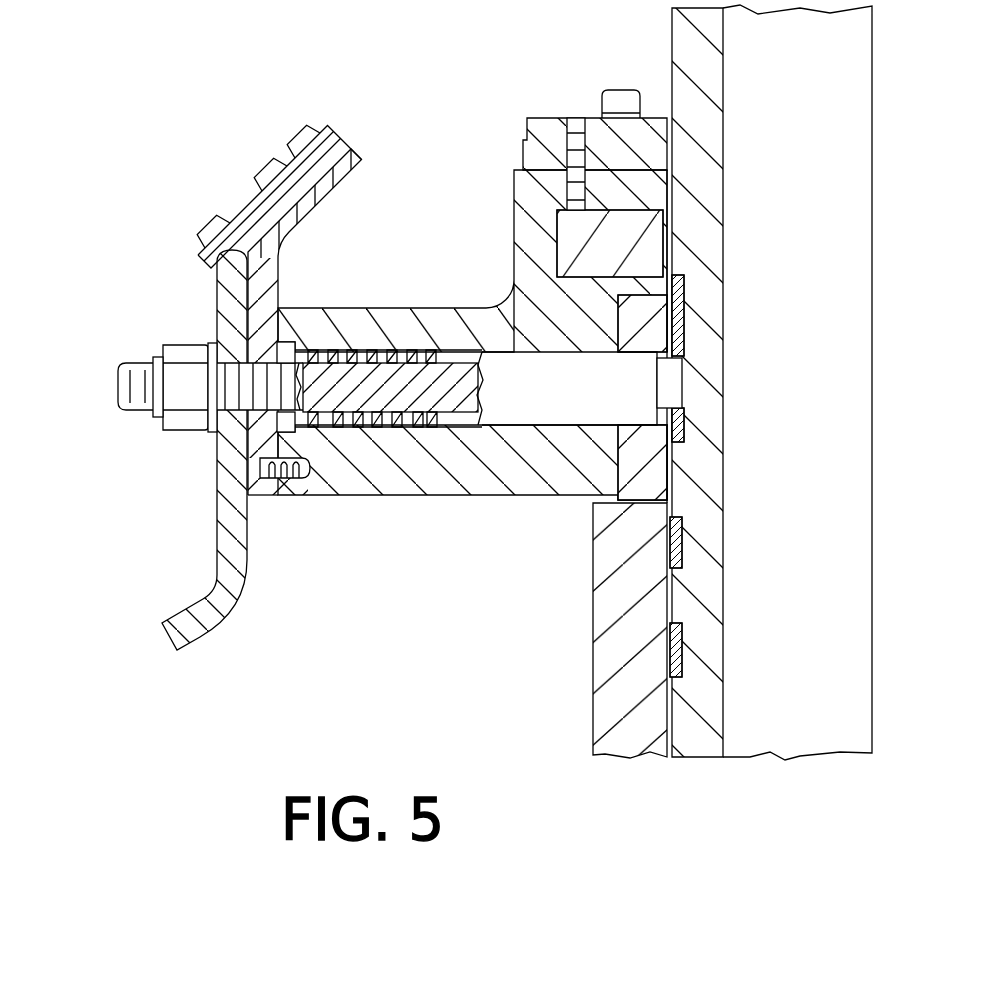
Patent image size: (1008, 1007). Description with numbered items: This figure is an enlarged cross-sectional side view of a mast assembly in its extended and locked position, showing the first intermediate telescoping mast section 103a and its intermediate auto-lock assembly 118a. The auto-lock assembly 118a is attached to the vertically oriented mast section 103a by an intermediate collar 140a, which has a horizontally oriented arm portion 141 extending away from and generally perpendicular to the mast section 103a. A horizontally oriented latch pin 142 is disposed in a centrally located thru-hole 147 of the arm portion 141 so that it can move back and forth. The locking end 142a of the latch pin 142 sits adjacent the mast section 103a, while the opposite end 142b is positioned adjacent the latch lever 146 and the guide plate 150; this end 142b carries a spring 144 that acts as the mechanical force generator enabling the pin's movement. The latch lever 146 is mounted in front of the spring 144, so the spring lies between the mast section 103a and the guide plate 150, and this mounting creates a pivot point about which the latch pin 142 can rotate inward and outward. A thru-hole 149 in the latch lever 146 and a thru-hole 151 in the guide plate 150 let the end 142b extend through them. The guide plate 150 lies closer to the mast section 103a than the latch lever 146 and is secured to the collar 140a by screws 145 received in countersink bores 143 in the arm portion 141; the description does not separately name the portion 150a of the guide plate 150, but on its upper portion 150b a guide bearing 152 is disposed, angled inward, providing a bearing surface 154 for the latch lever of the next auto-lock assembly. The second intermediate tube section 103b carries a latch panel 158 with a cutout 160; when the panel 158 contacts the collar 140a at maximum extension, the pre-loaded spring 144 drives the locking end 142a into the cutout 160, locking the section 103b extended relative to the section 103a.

The telescoping mast section 103a is at (603, 677).
The second intermediate tube section 103b is at (693, 740).
The intermediate auto-lock assembly 118a is at (175, 418).
The intermediate collar 140a is at (514, 208).
The arm portion 141 is at (377, 315).
The latch pin 142 is at (565, 398).
The locking end 142a is at (674, 383).
The opposite end 142b is at (128, 360).
The countersink bore 143 is at (280, 482).
The spring 144 is at (322, 350).
The screw 145 is at (258, 483).
The latch lever 146 is at (222, 565).
The thru-hole 147 is at (453, 348).
The thru-hole 149 is at (228, 420).
The guide plate 150 is at (257, 308).
The lower bracket portion 150a is at (272, 445).
The upper portion 150b is at (350, 142).
The thru-hole 151 is at (253, 425).
The guide bearing 152 is at (213, 240).
The bearing surface 154 is at (249, 200).
The latch panel 158 is at (679, 303).
The cutout 160 is at (677, 350).